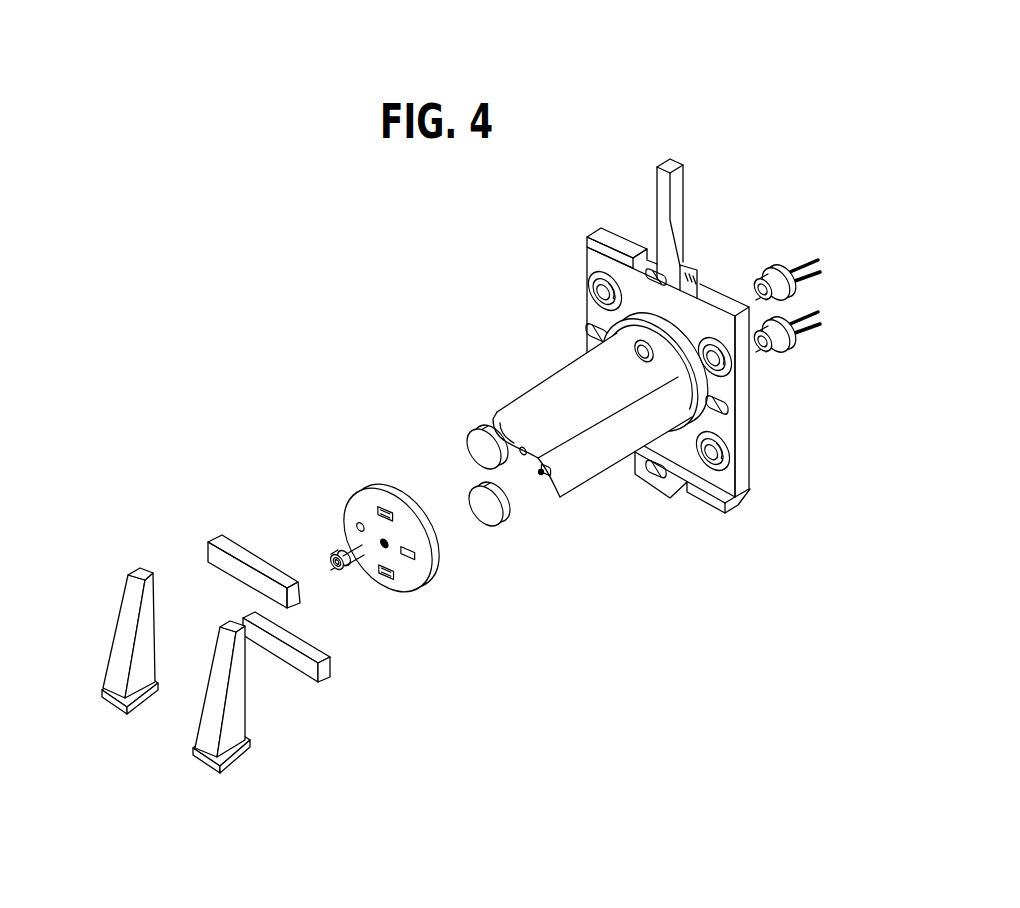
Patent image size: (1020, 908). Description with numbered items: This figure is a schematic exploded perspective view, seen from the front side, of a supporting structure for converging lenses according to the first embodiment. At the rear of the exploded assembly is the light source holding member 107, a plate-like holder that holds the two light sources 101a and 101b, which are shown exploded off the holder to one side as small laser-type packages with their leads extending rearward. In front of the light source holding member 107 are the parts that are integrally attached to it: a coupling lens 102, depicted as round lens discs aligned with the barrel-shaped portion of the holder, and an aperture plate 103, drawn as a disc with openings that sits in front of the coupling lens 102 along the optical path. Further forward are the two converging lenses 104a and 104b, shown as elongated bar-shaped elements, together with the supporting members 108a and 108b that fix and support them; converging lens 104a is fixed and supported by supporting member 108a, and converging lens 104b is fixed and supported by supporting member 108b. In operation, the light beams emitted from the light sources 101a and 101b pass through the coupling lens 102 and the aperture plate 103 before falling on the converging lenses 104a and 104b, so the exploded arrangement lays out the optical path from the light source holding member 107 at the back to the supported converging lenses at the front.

The light source 101a is at (773, 270).
The light source 101b is at (789, 350).
The coupling lens 102 is at (472, 442).
The aperture plate 103 is at (419, 578).
The converging lens 104a is at (233, 547).
The converging lens 104b is at (327, 663).
The light source holding member 107 is at (717, 296).
The supporting member 108a is at (114, 637).
The supporting member 108b is at (240, 720).